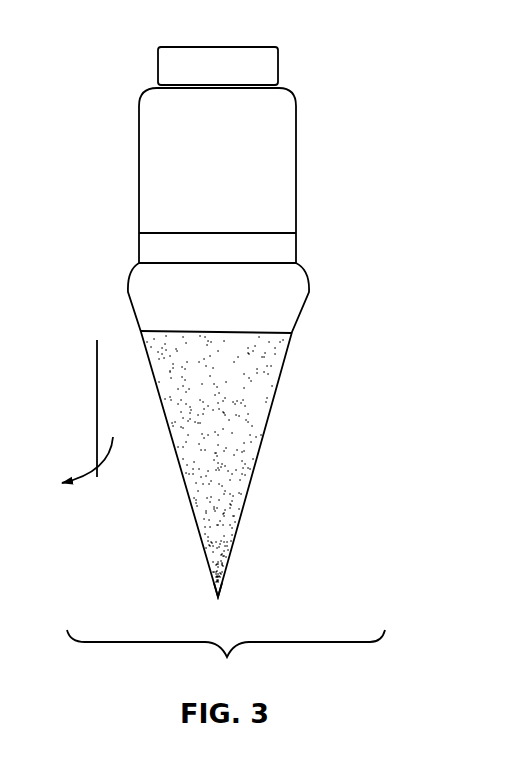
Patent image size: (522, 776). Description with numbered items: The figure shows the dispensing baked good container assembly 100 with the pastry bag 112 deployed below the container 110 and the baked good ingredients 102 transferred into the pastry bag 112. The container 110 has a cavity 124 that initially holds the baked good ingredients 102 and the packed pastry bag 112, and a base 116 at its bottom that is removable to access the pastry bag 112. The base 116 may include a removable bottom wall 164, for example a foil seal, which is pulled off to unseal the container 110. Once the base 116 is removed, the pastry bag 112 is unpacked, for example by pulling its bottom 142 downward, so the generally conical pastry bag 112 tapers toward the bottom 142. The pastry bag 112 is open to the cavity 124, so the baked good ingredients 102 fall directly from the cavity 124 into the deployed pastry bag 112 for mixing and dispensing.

The container assembly 100 is at (355, 99).
The baked good ingredients 102 is at (255, 394).
The container 110 is at (296, 153).
The pastry bag 112 is at (302, 315).
The base 116 is at (296, 245).
The cavity 124 is at (157, 121).
The bottom 142 is at (221, 594).
The bottom wall 164 is at (97, 410).